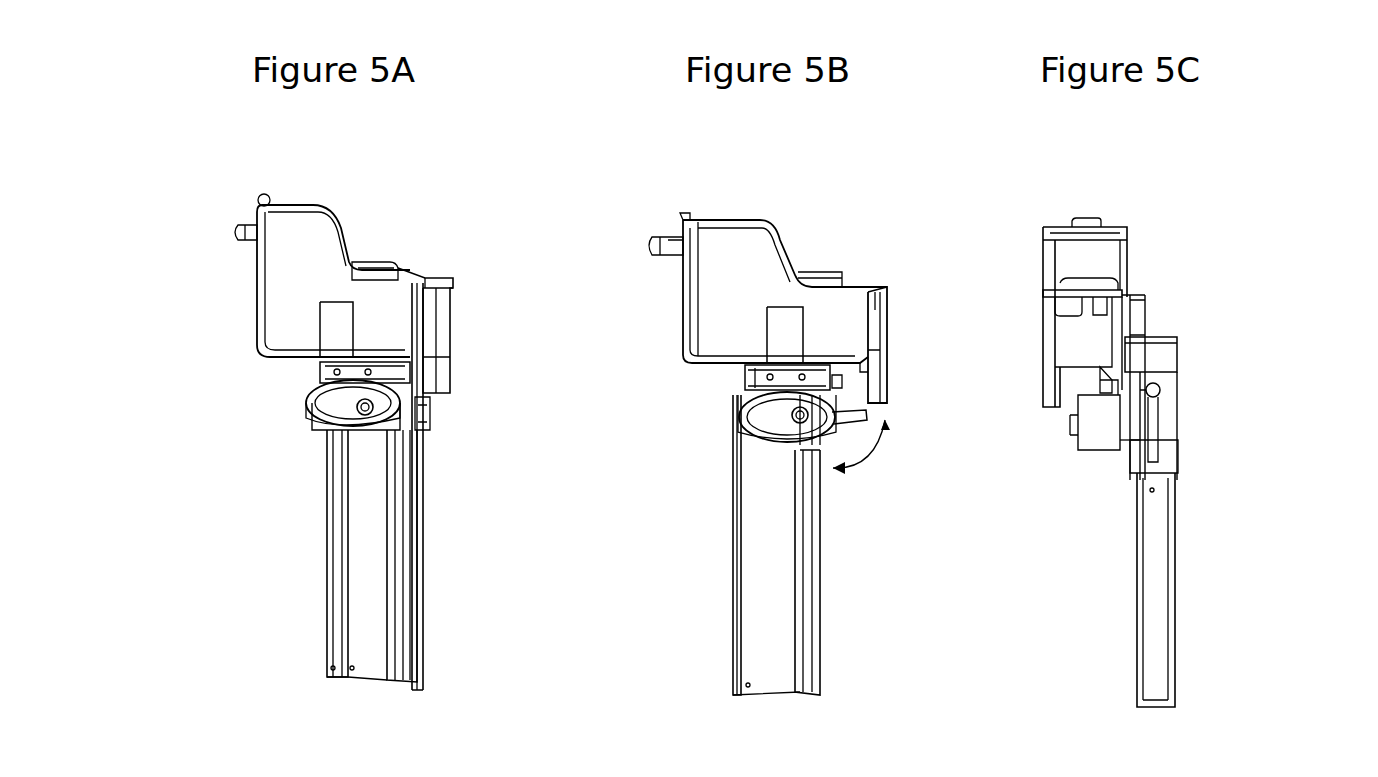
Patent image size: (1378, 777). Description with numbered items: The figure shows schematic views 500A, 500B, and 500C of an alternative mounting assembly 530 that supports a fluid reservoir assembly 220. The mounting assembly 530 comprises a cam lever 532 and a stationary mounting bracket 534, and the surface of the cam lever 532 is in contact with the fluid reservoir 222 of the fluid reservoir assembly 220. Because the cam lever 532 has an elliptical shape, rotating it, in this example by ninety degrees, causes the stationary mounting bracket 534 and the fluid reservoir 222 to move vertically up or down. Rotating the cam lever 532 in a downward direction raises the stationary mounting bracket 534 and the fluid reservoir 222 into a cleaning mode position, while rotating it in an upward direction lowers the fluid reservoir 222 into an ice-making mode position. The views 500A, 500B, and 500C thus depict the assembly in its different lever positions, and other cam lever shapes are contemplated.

In FIG. 5A, the fluid reservoir and mounting assembly (ice-making position view) 500A is at (457, 165).
In FIG. 5B, the fluid reservoir and mounting assembly (rotated lever view) 500B is at (885, 167).
In FIG. 5C, the fluid reservoir and mounting assembly (side view) 500C is at (1212, 178).
In FIG. 5A, the fluid reservoir assembly 220 is at (195, 360).
In FIG. 5B, the fluid reservoir assembly 220 is at (610, 380).
In FIG. 5C, the fluid reservoir assembly 220 is at (1032, 418).
In FIG. 5A, the fluid reservoir 222 is at (262, 298).
In FIG. 5B, the fluid reservoir 222 is at (690, 314).
In FIG. 5C, the fluid reservoir 222 is at (1127, 253).
In FIG. 5A, the mounting assembly 530 is at (195, 690).
In FIG. 5B, the mounting assembly 530 is at (645, 690).
In FIG. 5C, the mounting assembly 530 is at (1212, 692).
In FIG. 5A, the cam lever 532 is at (332, 432).
In FIG. 5B, the cam lever 532 is at (752, 442).
In FIG. 5A, the stationary mounting bracket 534 is at (390, 438).
In FIG. 5B, the stationary mounting bracket 534 is at (790, 447).